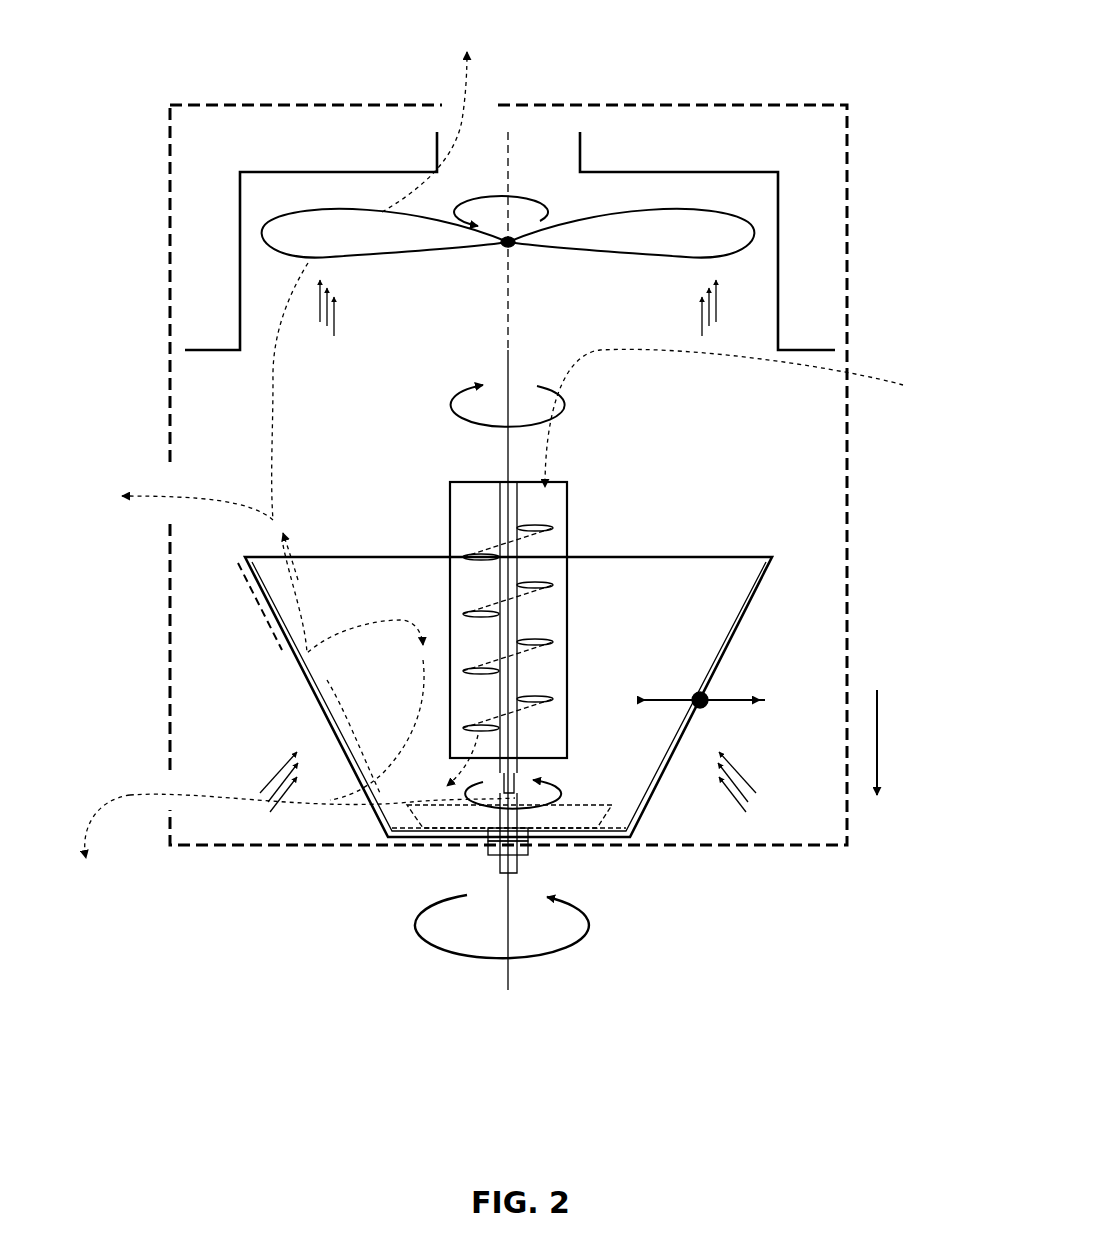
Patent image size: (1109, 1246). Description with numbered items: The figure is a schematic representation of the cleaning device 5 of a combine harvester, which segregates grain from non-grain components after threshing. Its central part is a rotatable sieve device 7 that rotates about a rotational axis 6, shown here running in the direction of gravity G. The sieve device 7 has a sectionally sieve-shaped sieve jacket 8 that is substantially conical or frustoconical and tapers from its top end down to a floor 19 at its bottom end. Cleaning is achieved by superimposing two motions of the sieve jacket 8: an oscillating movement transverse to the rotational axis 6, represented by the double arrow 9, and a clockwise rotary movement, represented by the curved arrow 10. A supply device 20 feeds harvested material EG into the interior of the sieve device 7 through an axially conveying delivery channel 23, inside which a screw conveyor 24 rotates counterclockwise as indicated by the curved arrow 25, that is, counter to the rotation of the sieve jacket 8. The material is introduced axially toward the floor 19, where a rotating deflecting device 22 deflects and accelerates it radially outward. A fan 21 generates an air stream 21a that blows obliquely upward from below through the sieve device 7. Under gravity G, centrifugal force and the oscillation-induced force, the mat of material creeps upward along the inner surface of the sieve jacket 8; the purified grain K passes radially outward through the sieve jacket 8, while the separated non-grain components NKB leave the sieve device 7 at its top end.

The cleaning device 5 is at (850, 812).
The rotational axis 6 is at (507, 350).
The sieve device 7 is at (752, 548).
The sieve jacket 8 is at (253, 600).
The double arrow 9 is at (700, 700).
The curved arrow 10 is at (465, 957).
The floor 19 is at (382, 825).
The supply device 20 is at (562, 470).
The fan 21 is at (688, 232).
The air stream 21a is at (321, 302).
The rotating deflecting device 22 is at (610, 830).
The delivery channel 23 is at (522, 548).
The screw conveyor 24 is at (535, 527).
The curved arrow 25 is at (452, 405).
The non-grain components NKB is at (293, 400).
The harvested material EG is at (741, 415).
The gravity G is at (878, 733).
The purified grain K is at (295, 848).